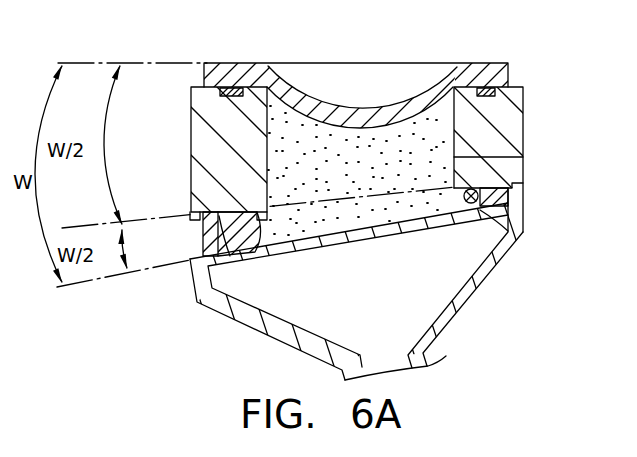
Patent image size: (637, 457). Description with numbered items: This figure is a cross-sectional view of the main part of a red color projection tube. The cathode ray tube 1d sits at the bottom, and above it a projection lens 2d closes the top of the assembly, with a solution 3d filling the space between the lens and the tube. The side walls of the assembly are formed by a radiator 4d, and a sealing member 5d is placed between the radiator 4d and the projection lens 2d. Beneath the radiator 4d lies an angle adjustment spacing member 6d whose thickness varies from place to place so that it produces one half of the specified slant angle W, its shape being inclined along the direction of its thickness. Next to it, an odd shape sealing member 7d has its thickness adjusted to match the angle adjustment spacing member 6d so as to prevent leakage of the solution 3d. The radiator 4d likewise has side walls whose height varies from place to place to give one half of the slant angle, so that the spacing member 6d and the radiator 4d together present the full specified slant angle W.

The cathode ray tube 1d is at (478, 290).
The projection lens 2d is at (493, 72).
The solution 3d is at (422, 170).
The radiator 4d is at (523, 101).
The sealing member 5d is at (236, 88).
The angle adjustment spacing member 6d is at (490, 198).
The odd shape sealing member 7d is at (515, 230).